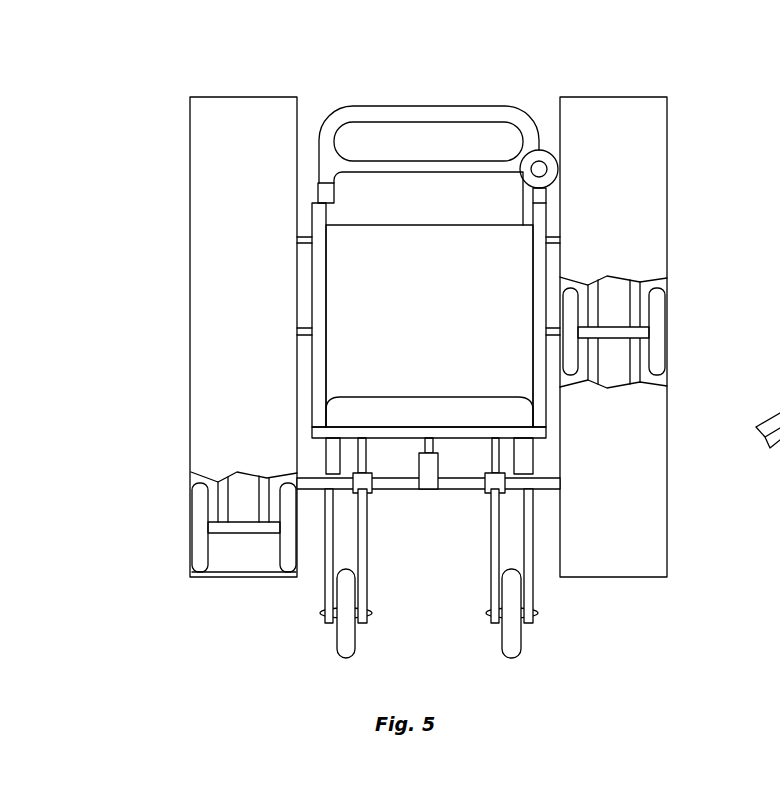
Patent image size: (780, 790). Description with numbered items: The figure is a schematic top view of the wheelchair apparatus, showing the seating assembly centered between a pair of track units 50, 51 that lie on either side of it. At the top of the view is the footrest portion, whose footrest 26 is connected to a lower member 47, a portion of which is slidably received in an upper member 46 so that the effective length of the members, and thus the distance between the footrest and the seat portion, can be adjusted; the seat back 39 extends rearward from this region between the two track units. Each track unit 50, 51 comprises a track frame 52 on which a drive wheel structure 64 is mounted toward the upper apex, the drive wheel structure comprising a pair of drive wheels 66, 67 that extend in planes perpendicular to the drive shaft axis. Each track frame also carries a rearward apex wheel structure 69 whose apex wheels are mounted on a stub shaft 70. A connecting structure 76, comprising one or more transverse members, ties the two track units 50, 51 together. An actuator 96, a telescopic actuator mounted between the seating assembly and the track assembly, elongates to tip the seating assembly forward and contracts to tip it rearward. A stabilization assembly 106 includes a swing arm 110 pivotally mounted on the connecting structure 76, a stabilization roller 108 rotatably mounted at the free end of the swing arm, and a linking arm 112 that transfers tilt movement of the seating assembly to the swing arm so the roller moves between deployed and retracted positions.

The track unit 50 is at (235, 95).
The track unit 51 is at (613, 90).
The footrest 26 is at (431, 117).
The lower member 47 is at (325, 153).
The upper member 46 is at (328, 188).
The seat back 39 is at (320, 280).
The track frame 52 is at (634, 290).
The drive wheel structure 64 is at (628, 330).
The drive wheel 66 is at (573, 345).
The drive wheel 67 is at (658, 343).
The linking arm 112 is at (363, 463).
The actuator 96 is at (428, 470).
The connecting structure 76 is at (542, 482).
The rearward apex wheel structure 69 is at (208, 541).
The stub shaft 70 is at (243, 527).
The swing arm 110 is at (362, 575).
The stabilization assembly 106 is at (385, 578).
The stabilization roller 108 is at (345, 630).